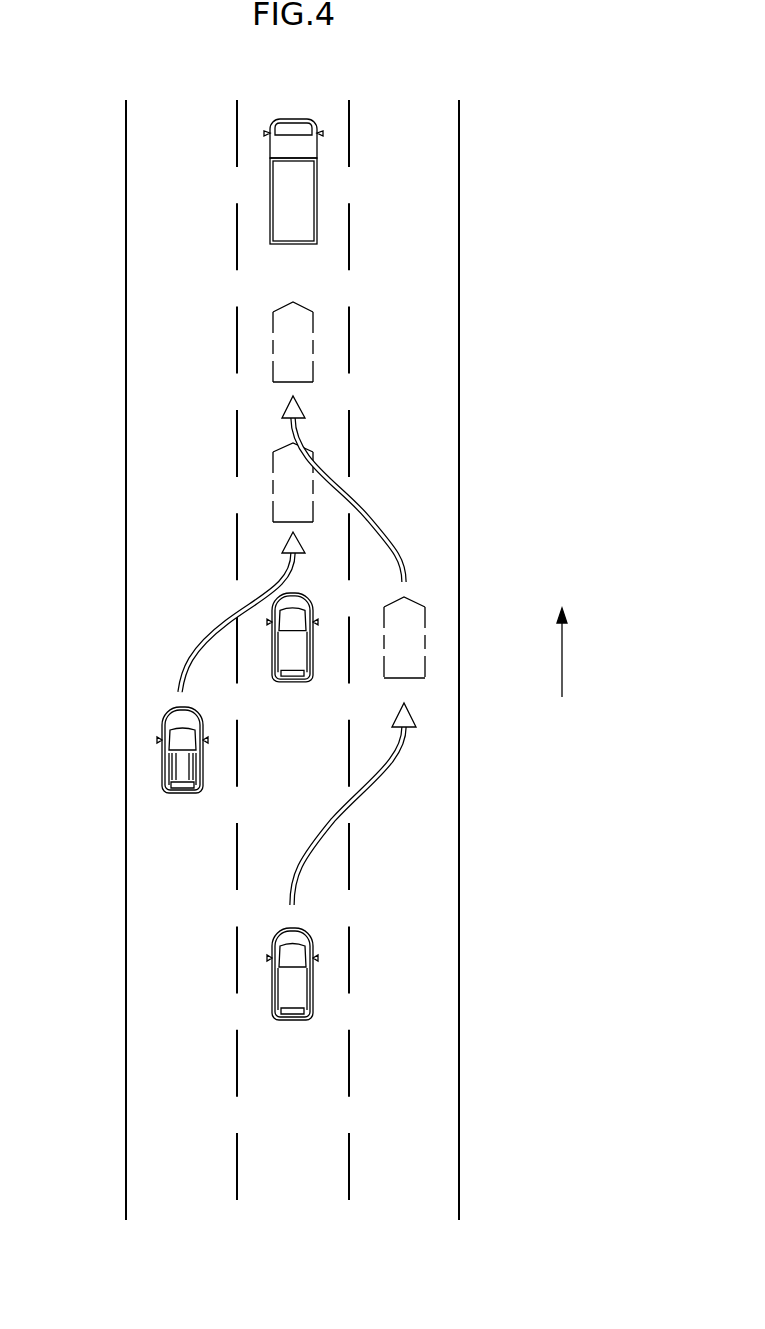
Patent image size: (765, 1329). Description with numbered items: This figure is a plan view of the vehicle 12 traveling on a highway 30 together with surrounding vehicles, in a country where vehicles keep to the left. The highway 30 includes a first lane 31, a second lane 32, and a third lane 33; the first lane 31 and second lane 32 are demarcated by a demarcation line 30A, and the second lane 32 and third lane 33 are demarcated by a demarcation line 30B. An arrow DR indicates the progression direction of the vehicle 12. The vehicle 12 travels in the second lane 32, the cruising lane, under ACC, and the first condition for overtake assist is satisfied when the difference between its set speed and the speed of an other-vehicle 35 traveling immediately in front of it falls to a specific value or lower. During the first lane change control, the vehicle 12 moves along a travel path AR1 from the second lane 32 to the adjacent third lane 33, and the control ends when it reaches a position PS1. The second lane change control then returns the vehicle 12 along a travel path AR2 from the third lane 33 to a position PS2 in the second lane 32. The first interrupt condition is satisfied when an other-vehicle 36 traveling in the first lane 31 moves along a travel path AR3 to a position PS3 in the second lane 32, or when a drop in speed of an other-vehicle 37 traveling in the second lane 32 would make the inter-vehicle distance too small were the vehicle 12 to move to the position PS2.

The highway 30 is at (324, 660).
The first lane 31 is at (138, 222).
The third lane 33 is at (443, 230).
The second lane 32 is at (287, 650).
The demarcation line 30A is at (237, 348).
The demarcation line 30B is at (350, 977).
The other-vehicle 37 is at (302, 178).
The other-vehicle 35 is at (295, 683).
The other-vehicle 36 is at (162, 773).
The vehicle 12 is at (267, 1010).
The position PS1 is at (425, 650).
The position PS2 is at (313, 341).
The position PS3 is at (273, 500).
The travel path AR1 is at (377, 787).
The travel path AR2 is at (395, 530).
The travel path AR3 is at (215, 630).
The arrow DR is at (563, 663).